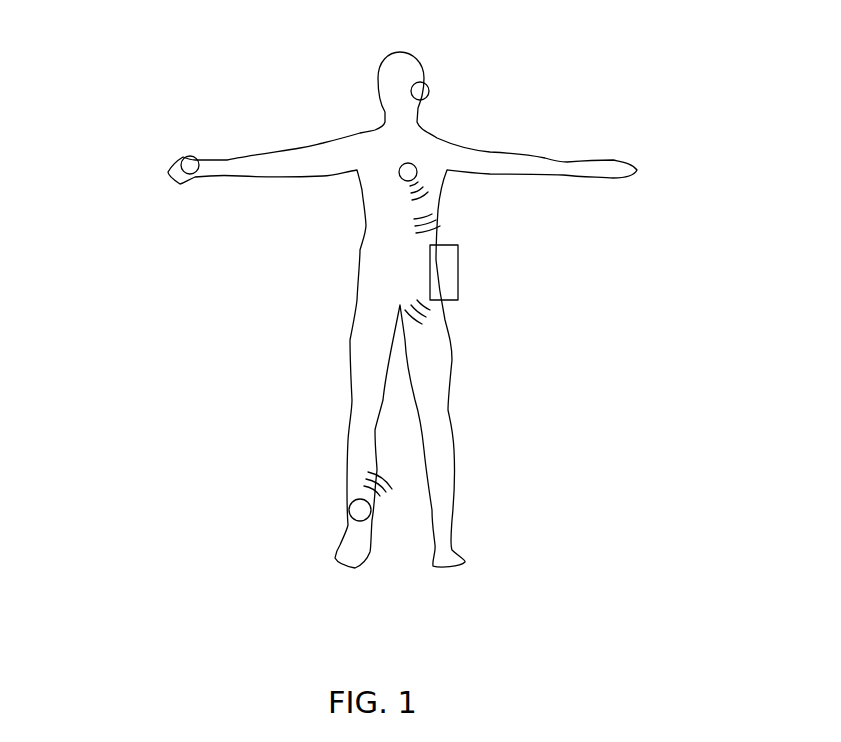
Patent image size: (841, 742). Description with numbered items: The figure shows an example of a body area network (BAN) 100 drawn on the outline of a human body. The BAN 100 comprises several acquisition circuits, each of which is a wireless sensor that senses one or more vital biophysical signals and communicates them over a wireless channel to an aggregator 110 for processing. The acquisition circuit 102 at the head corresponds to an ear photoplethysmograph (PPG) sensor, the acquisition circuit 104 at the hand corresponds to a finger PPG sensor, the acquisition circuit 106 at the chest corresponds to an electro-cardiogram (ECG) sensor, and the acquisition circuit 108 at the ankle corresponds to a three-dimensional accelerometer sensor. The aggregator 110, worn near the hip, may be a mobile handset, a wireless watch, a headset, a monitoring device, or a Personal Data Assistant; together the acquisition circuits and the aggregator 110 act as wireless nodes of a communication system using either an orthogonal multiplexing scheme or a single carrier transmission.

The body area network 100 is at (400, 53).
The acquisition circuit 102 is at (428, 84).
The acquisition circuit 104 is at (152, 252).
The acquisition circuit 106 is at (400, 178).
The acquisition circuit 108 is at (348, 508).
The aggregator 110 is at (458, 270).